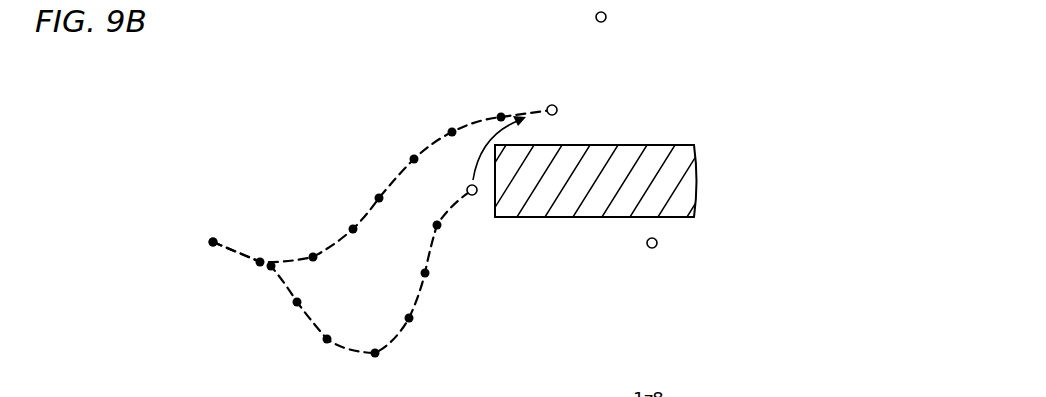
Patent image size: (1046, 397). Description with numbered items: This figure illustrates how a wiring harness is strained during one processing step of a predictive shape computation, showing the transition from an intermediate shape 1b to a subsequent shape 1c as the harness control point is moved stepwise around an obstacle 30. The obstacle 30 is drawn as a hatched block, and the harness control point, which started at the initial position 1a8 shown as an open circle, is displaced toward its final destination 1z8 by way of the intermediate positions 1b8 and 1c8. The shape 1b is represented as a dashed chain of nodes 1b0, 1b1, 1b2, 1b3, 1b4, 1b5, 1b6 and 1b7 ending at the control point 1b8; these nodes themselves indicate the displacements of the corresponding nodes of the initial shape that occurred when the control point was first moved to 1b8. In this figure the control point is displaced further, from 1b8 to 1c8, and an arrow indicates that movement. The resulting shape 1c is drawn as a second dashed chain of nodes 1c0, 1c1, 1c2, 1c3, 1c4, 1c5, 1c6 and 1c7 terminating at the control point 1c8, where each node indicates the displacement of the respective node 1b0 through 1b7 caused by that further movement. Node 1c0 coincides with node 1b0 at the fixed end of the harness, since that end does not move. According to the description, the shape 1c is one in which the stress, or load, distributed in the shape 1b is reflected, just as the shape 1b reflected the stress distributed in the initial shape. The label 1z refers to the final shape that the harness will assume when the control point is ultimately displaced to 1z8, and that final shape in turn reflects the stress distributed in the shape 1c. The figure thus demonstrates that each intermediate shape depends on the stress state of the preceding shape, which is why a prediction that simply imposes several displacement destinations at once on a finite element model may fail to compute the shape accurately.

The obstacle 30 is at (612, 145).
The shape 1b is at (348, 358).
The shape 1c is at (374, 226).
The node 1b0 is at (213, 237).
The node 1c0 is at (213, 242).
The node 1b1 is at (270, 271).
The node 1b2 is at (296, 306).
The node 1b3 is at (325, 342).
The node 1b4 is at (377, 357).
The node 1b5 is at (412, 319).
The node 1b6 is at (428, 275).
The node 1b7 is at (440, 229).
The control point 1b8 is at (475, 195).
The node 1c1 is at (257, 265).
The node 1c2 is at (312, 253).
The node 1c3 is at (352, 225).
The node 1c4 is at (378, 194).
The node 1c5 is at (413, 155).
The node 1c6 is at (451, 128).
The node 1c7 is at (501, 113).
The control point 1c8 is at (554, 105).
The control point 1z8 is at (606, 19).
The control point 1a8 is at (657, 245).
The shape 1z is at (542, 386).